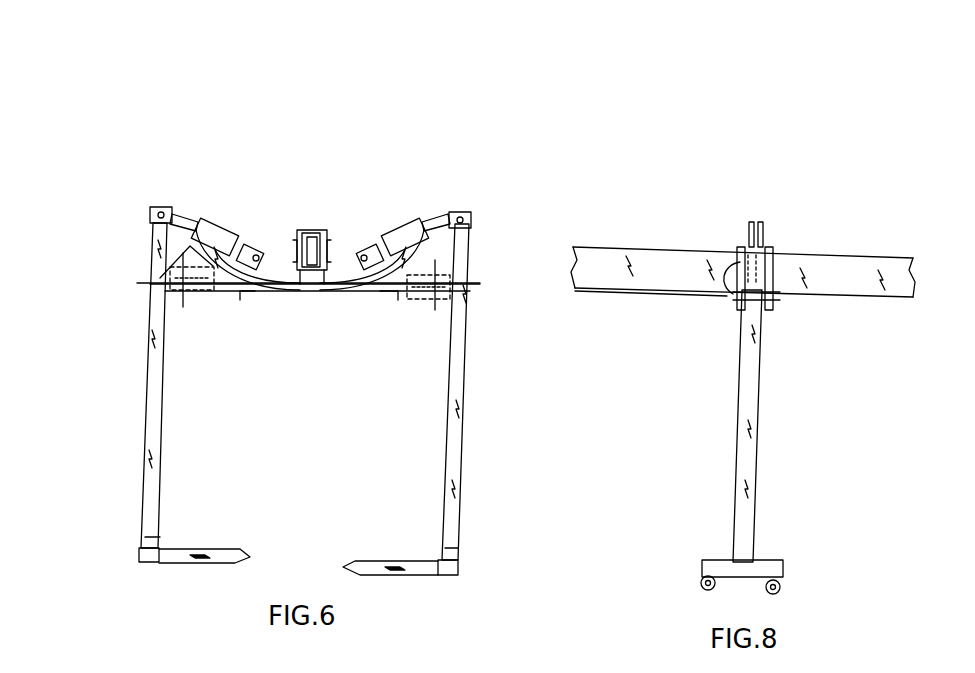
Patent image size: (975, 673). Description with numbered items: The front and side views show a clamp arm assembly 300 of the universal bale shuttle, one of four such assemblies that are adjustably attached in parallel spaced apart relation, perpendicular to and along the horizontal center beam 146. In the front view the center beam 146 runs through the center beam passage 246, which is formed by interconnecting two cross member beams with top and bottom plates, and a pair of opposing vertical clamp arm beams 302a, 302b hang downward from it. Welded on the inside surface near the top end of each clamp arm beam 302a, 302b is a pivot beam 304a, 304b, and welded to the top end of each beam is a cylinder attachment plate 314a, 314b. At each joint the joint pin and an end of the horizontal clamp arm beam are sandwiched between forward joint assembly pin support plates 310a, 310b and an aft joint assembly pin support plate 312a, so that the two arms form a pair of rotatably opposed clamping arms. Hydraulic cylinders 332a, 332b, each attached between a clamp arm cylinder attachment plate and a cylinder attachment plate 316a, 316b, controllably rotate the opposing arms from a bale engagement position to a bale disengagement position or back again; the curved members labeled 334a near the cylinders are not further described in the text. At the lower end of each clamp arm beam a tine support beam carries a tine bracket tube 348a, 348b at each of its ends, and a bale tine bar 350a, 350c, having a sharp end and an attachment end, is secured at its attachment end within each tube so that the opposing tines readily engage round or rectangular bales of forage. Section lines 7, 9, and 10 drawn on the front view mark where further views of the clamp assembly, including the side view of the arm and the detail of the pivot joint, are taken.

In FIG. 6, the clamp arm assembly 300 is at (303, 88).
In FIG. 8, the clamp arm assembly 300 is at (805, 85).
In FIG. 6, the section line 7- 7 is at (178, 138).
In FIG. 6, the section line 9- 9 is at (357, 152).
In FIG. 6, the section line 10- 10 is at (150, 280).
In FIG. 6, the horizontal center beam 146 is at (296, 291).
In FIG. 8, the horizontal center beam 146 is at (843, 267).
In FIG. 6, the center beam passage 246 is at (322, 230).
In FIG. 6, the clamp arm beam 302a is at (460, 428).
In FIG. 8, the clamp arm beam 302a is at (762, 467).
In FIG. 6, the clamp arm beam 302b is at (145, 417).
In FIG. 6, the pivot beam 304a is at (447, 300).
In FIG. 6, the pivot beam 304b is at (240, 305).
In FIG. 6, the forward joint assembly pin support plate 310a is at (410, 297).
In FIG. 8, the forward joint assembly pin support plate 310a is at (735, 308).
In FIG. 6, the forward joint assembly pin support plate 310b is at (243, 297).
In FIG. 8, the aft joint assembly pin support plate 312a is at (774, 308).
In FIG. 6, the cylinder attachment plate 314a is at (449, 576).
In FIG. 8, the cylinder attachment plate 314a is at (755, 580).
In FIG. 6, the cylinder attachment plate 314b is at (143, 567).
In FIG. 6, the cylinder attachment plate 316a is at (470, 226).
In FIG. 8, the cylinder attachment plate 316a is at (760, 222).
In FIG. 6, the cylinder attachment plate 316b is at (152, 213).
In FIG. 6, the hydraulic cylinder 332a is at (410, 225).
In FIG. 6, the hydraulic cylinder 332b is at (238, 215).
In FIG. 6, the arcuate arm members 334a is at (258, 250).
In FIG. 8, the tine bracket tube 348a is at (700, 590).
In FIG. 8, the tine bracket tube 348b is at (781, 587).
In FIG. 6, the bale tine bar 350a is at (350, 560).
In FIG. 6, the bale tine bar 350c is at (233, 549).